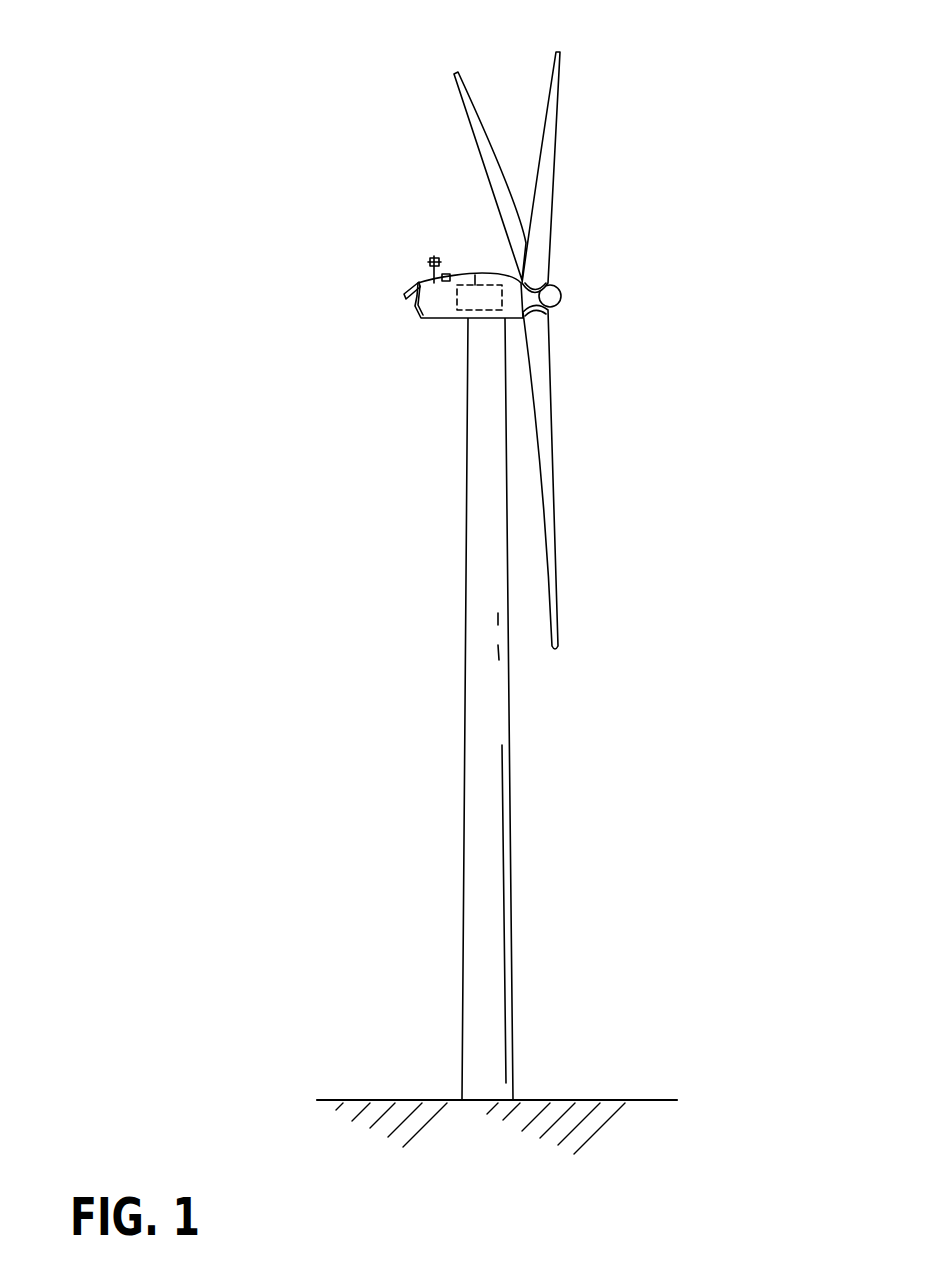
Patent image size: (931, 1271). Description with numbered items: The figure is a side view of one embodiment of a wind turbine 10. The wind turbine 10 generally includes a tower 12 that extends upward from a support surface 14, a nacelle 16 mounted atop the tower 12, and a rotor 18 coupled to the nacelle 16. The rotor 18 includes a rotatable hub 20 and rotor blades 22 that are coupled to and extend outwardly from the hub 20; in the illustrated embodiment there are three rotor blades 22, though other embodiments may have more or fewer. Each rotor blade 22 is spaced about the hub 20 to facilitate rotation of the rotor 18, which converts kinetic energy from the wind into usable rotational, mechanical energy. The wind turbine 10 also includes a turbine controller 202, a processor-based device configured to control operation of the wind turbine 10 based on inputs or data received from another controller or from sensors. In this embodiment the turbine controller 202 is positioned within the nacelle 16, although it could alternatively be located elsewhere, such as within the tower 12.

The wind turbine 10 is at (569, 550).
The tower 12 is at (473, 898).
The support surface 14 is at (383, 1100).
The nacelle 16 is at (449, 279).
The rotor 18 is at (520, 324).
The rotatable hub 20 is at (559, 300).
The rotor blade 22 is at (477, 117).
The turbine controller 202 is at (475, 272).